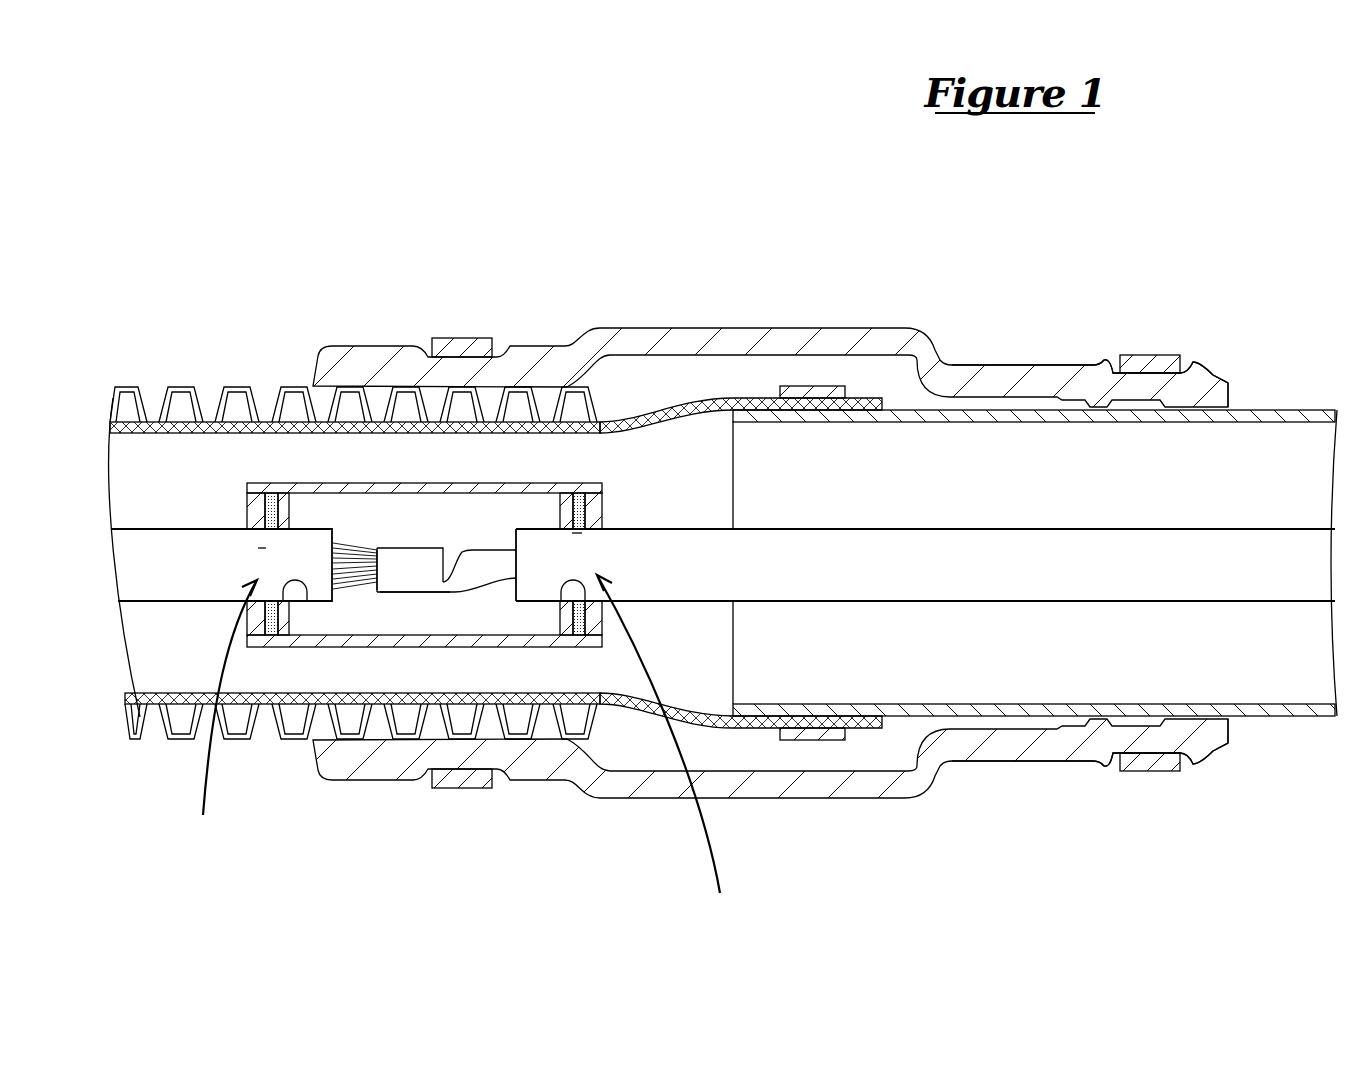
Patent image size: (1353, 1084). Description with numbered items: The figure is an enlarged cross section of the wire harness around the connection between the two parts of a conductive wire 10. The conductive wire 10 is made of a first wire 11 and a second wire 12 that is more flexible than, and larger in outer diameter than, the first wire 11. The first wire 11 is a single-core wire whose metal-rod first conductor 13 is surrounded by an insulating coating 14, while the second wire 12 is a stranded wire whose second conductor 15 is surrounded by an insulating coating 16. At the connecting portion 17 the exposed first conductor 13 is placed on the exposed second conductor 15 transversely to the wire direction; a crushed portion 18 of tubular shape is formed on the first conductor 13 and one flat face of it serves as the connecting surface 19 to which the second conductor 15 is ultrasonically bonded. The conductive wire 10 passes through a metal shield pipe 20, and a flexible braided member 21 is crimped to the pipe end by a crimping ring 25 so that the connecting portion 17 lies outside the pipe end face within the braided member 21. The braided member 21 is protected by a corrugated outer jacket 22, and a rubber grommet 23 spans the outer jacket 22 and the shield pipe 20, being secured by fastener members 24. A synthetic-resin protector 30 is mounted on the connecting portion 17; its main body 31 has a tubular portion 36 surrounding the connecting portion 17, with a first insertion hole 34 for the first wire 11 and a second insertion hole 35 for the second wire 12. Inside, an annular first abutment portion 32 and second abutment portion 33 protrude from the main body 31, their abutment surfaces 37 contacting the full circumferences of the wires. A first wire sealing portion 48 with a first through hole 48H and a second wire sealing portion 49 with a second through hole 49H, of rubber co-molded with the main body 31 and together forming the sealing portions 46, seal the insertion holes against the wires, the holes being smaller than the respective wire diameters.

The conductive wire 10 is at (860, 512).
The first wire 11 is at (983, 545).
The second wire 12 is at (143, 553).
The first conductor 13 is at (487, 567).
The insulating coating 14 is at (703, 578).
The second conductor 15 is at (360, 572).
The insulating coating 16 is at (168, 578).
The connecting portion 17 is at (413, 567).
The crushed portion 18 is at (418, 592).
The connecting surface 19 is at (380, 572).
The shield pipe 20 is at (1297, 417).
The braided member 21 is at (240, 428).
The outer jacket 22 is at (288, 398).
The grommet 23 is at (815, 340).
The fastener member 24 is at (457, 346).
The crimping ring 25 is at (828, 737).
The protector 30 is at (510, 512).
The main body 31 is at (552, 647).
The first abutment portion 32 is at (567, 510).
The second abutment portion 33 is at (287, 510).
The first insertion hole 34 is at (668, 749).
The second insertion hole 35 is at (221, 714).
The tubular portion 36 is at (460, 647).
The abutment surface 37 is at (305, 601).
The seal member 46 is at (437, 416).
The first wire sealing portion 48 is at (583, 513).
The first through hole 48H is at (577, 533).
The second wire sealing portion 49 is at (283, 513).
The second through hole 49H is at (262, 548).